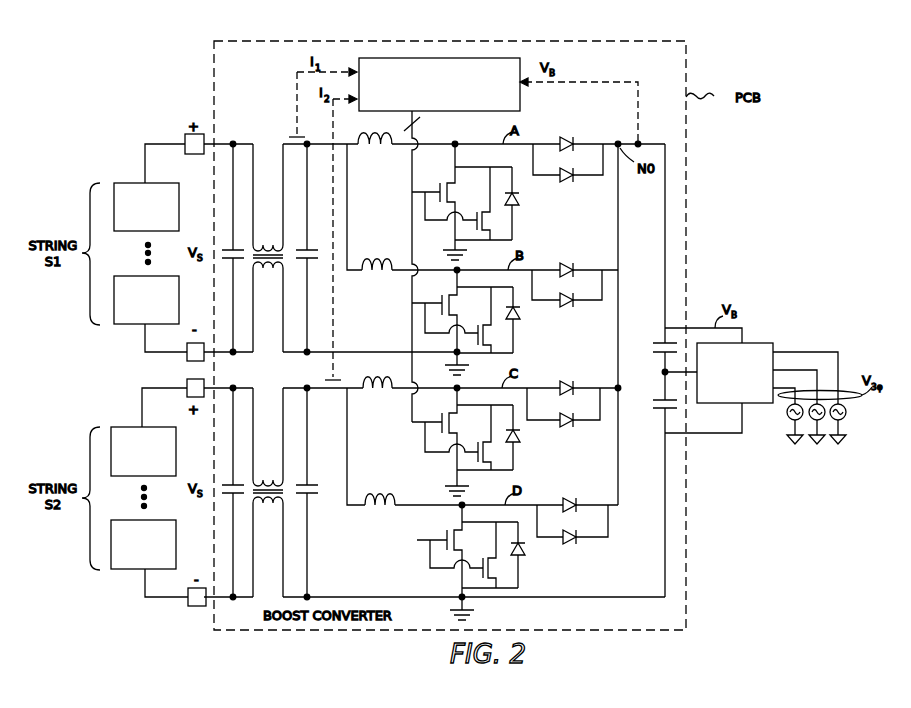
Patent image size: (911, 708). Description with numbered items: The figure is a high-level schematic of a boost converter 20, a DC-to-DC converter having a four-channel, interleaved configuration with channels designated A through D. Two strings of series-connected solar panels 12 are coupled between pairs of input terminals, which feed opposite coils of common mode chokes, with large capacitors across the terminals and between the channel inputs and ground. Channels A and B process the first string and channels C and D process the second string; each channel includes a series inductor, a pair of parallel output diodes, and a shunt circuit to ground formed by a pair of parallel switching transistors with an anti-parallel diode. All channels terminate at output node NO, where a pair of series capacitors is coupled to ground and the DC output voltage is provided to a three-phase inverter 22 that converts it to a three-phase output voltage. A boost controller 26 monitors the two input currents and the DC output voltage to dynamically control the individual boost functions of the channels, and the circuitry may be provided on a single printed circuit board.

The solar panel 12 is at (127, 183).
The boost converter 20 is at (653, 33).
The three-phase inverter 22 is at (760, 343).
The boost controller 26 is at (520, 100).